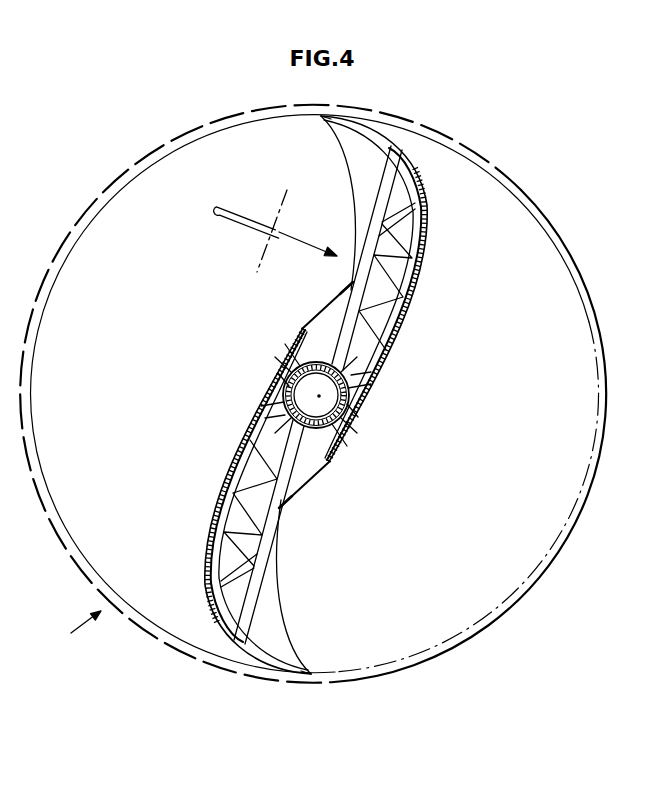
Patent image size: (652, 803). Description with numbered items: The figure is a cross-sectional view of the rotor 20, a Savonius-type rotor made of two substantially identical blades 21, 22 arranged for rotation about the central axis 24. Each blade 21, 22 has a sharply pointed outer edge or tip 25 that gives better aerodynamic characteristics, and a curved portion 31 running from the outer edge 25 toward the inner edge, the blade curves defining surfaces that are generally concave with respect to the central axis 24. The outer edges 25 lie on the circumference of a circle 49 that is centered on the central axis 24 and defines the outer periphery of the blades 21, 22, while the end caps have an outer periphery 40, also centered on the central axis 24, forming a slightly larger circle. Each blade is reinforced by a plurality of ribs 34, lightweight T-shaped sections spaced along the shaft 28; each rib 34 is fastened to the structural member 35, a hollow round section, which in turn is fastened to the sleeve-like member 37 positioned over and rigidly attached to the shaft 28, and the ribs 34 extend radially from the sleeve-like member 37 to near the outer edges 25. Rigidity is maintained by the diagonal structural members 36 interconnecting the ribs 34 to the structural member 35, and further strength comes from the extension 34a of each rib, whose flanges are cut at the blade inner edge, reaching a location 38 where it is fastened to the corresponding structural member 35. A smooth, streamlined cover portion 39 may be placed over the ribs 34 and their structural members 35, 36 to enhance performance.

The rotor 20 is at (69, 631).
The blade 21 is at (431, 228).
The blade 22 is at (229, 442).
The central axis 24 is at (321, 397).
The outer edge or tip 25 is at (321, 120).
The shaft 28 is at (286, 388).
The curved portion 31 is at (426, 196).
The ribs 34 is at (394, 149).
The extension of the ribs 34a is at (322, 302).
The structural member 35 is at (373, 247).
The diagonal structural members 36 is at (390, 297).
The sleeve-like member 37 is at (287, 350).
The location 38 is at (348, 284).
The cover portion 39 is at (216, 214).
The outer periphery 40 is at (590, 496).
The circle 49 is at (412, 665).